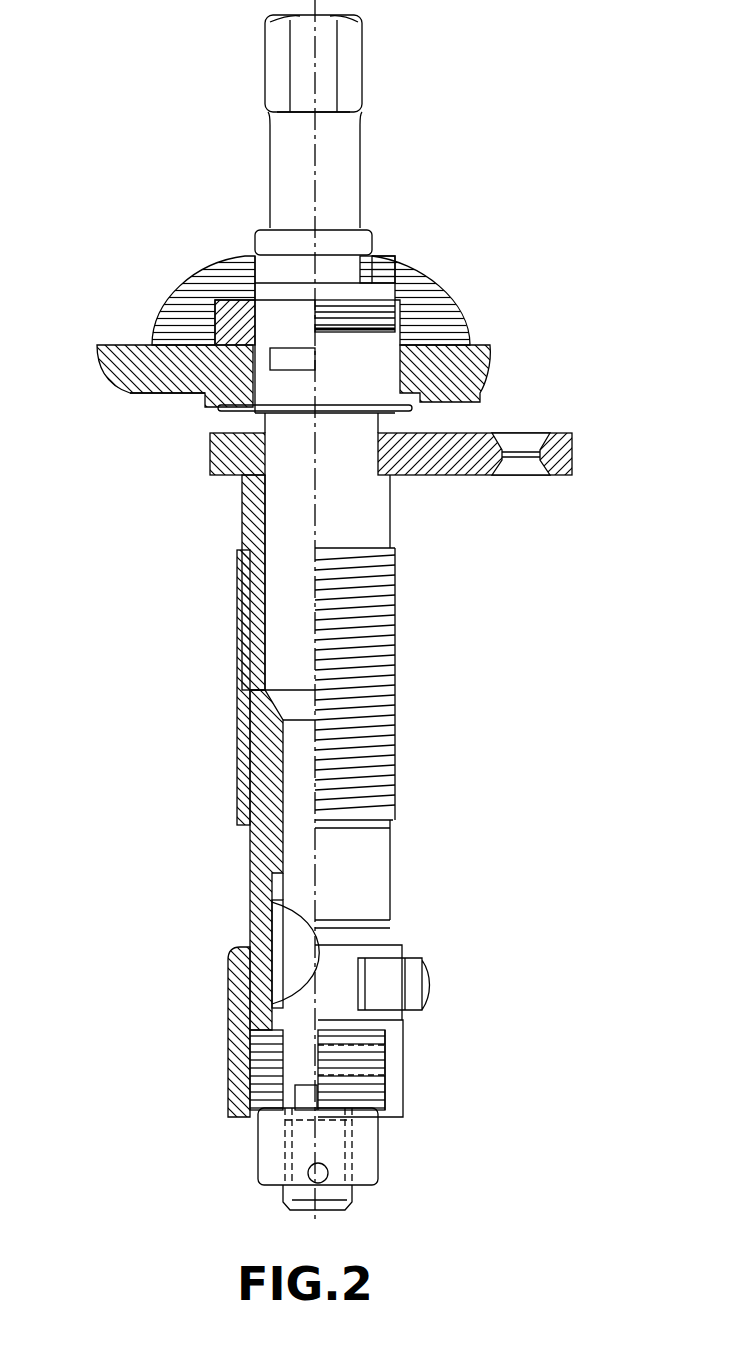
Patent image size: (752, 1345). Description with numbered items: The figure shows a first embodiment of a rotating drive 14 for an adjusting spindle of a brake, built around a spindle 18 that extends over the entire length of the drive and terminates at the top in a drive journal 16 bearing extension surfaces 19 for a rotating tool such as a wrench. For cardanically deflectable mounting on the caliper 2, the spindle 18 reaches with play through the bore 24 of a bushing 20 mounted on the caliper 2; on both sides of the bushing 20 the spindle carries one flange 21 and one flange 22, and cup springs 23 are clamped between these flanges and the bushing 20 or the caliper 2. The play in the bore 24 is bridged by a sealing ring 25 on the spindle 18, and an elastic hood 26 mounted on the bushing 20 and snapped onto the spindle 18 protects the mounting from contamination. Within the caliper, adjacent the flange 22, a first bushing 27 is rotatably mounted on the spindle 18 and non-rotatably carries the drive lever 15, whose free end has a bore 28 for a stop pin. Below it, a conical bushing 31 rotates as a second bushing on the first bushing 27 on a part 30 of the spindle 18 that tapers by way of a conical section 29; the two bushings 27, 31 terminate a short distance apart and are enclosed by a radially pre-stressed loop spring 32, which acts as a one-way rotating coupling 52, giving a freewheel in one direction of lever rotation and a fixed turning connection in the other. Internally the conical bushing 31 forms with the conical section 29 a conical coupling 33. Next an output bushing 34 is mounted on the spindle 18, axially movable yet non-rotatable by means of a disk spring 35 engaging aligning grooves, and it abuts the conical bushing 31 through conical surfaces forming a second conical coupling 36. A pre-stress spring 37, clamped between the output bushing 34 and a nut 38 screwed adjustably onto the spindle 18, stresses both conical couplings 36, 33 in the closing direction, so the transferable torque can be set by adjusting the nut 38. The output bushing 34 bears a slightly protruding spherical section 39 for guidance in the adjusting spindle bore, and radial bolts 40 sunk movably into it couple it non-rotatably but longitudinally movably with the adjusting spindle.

The caliper 2 is at (105, 355).
The rotating drive 14 is at (428, 245).
The drive lever 15 is at (232, 455).
The drive journal 16 is at (285, 165).
The spindle 18 is at (295, 1070).
The extension surfaces 19 is at (305, 58).
The bushing 20 is at (250, 362).
The flange 21 is at (270, 292).
The flange 22 is at (262, 425).
The cup springs 23 is at (447, 346).
The bore 24 is at (147, 387).
The sealing ring 25 is at (210, 327).
The hood 26 is at (395, 252).
The first bushing 27 is at (238, 513).
The bore 28 is at (535, 440).
The conical section 29 is at (307, 706).
The part of the spindle 30 is at (300, 842).
The conical bushing 31 is at (237, 737).
The loop spring 32 is at (242, 592).
The conical coupling 33 is at (250, 694).
The output bushing 34 is at (228, 985).
The disk spring 35 is at (287, 972).
The conical coupling 36 is at (257, 890).
The pre-stress spring 37 is at (260, 1068).
The nut 38 is at (268, 1162).
The spherical section 39 is at (232, 962).
The radial bolts 40 is at (418, 965).
The one-way rotating coupling 52 is at (430, 634).